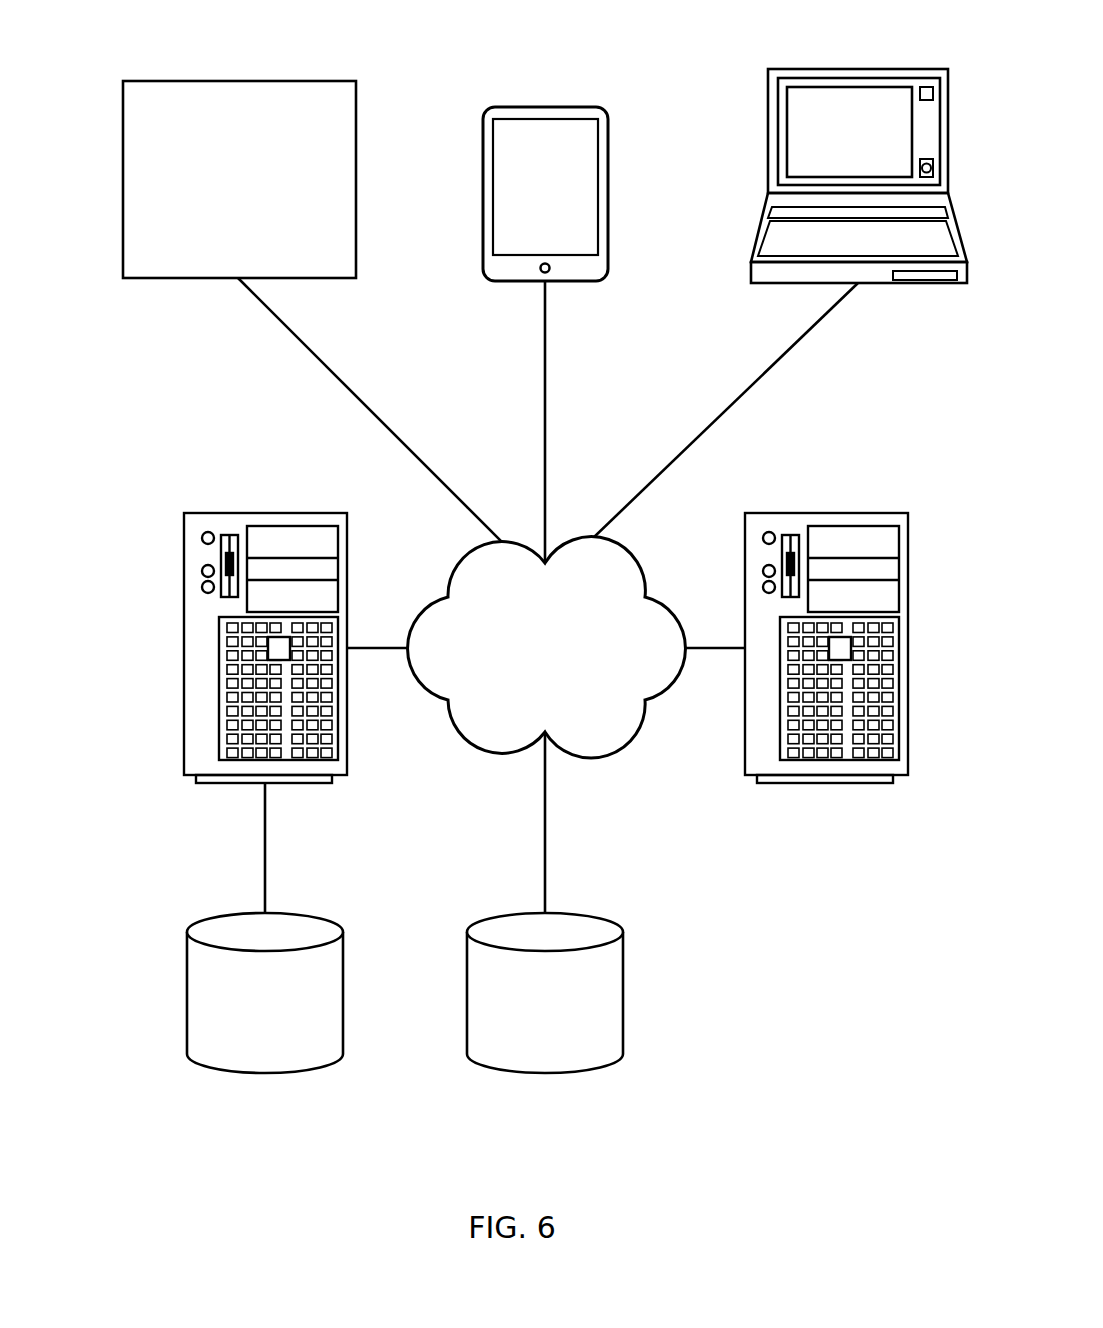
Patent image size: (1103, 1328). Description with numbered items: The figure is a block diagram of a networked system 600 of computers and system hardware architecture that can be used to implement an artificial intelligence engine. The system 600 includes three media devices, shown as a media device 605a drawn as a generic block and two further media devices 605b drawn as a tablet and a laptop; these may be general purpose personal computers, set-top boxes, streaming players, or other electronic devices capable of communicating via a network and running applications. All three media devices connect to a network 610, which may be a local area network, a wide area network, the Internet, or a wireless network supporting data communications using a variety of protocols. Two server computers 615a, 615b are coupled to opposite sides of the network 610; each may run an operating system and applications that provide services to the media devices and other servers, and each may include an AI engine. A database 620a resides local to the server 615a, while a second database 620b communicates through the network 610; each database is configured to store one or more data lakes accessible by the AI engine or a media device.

The system 600 is at (508, 626).
The media device 605a is at (303, 267).
The media device 605b is at (483, 230).
The network 610 is at (585, 757).
The server computer 615a is at (184, 648).
The server computer 615b is at (906, 648).
The database 620a is at (285, 1073).
The database 620b is at (565, 1073).